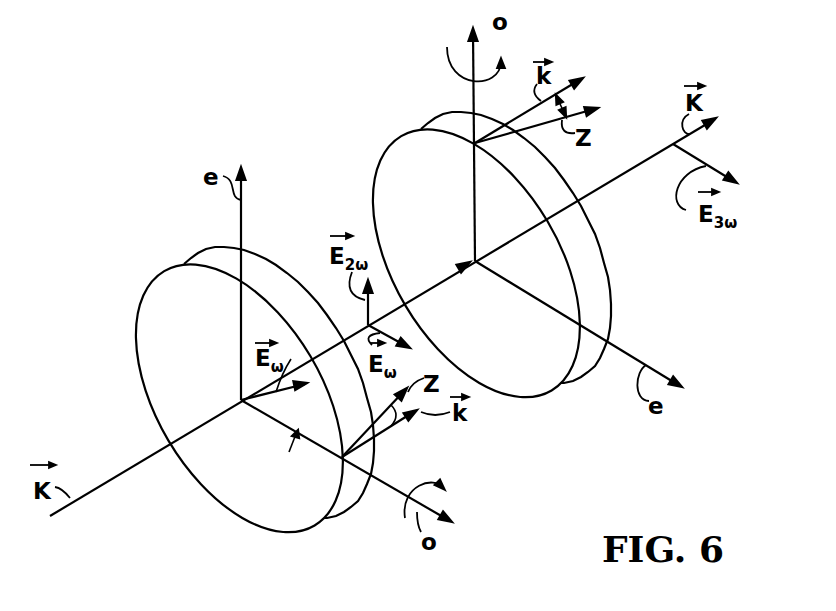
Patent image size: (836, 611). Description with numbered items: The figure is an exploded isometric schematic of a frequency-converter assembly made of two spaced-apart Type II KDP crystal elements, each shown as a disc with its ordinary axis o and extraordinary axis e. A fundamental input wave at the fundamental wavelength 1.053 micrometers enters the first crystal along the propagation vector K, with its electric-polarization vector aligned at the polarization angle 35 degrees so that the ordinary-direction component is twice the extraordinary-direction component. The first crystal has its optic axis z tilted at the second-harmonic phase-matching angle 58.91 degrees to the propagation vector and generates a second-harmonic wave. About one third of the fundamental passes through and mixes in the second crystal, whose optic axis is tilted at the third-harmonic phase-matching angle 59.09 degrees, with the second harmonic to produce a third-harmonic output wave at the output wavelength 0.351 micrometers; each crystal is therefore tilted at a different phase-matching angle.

The fundamental input wave wavelength 1.053 is at (214, 398).
The third-harmonic output wave wavelength 0.351 is at (567, 263).
The electric-polarization vector alignment angle 35 is at (291, 357).
The second-harmonic phase-matching angle 58.91 is at (393, 427).
The third-harmonic phase-matching angle 59.09 is at (568, 112).